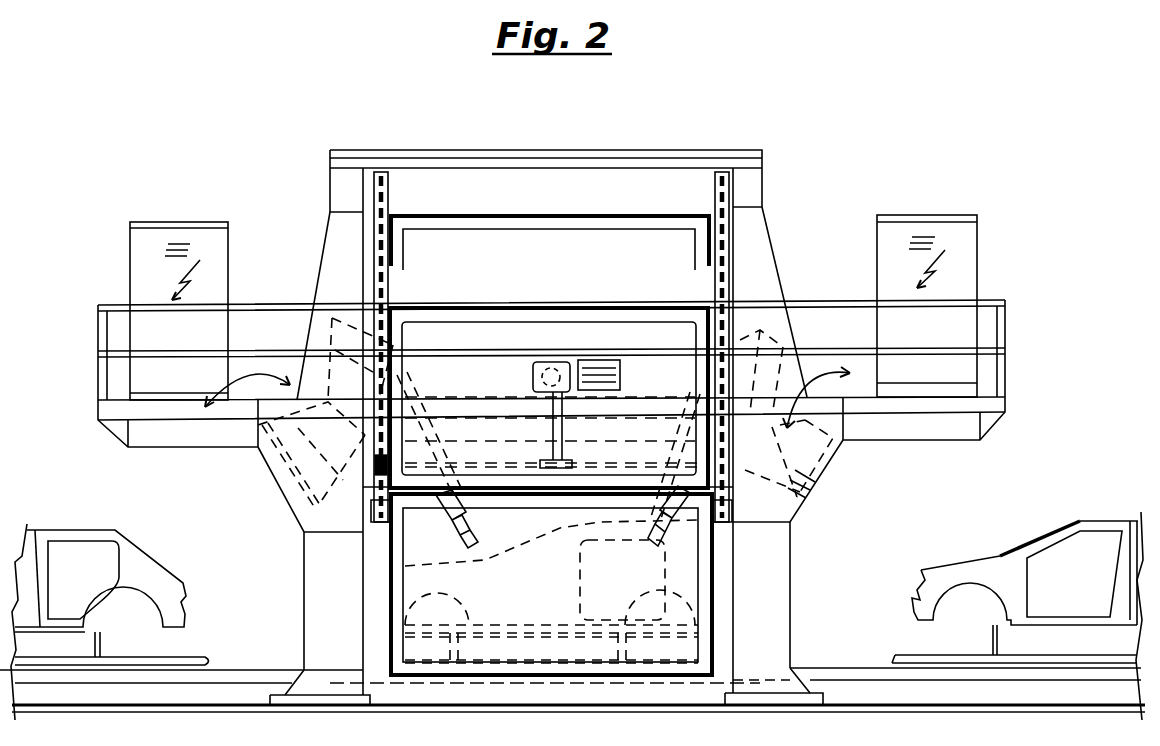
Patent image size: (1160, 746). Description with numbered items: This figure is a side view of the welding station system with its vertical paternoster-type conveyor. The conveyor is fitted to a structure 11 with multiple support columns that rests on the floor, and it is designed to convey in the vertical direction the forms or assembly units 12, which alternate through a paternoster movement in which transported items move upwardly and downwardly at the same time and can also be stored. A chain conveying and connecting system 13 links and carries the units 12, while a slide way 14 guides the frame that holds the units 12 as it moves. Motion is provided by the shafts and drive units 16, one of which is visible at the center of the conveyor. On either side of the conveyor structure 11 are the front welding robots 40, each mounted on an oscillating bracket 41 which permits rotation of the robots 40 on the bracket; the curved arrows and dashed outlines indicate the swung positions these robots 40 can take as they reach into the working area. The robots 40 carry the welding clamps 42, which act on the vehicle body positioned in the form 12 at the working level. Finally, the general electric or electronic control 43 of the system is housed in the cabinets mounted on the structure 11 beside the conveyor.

The structure 11 is at (763, 589).
The forms or assembly units 12 is at (632, 228).
The chain conveying and connecting system 13 is at (724, 193).
The slide way 14 is at (710, 207).
The shafts and drive units 16 is at (622, 378).
The front welding robots 40 is at (758, 458).
The oscillating bracket 41 is at (807, 489).
The welding clamps 42 is at (660, 542).
The general electric or electronic control 43 is at (958, 258).